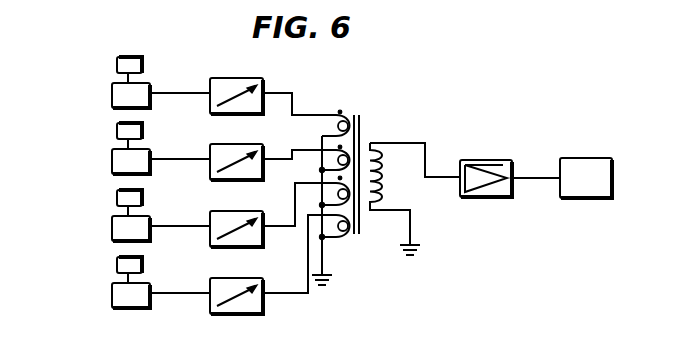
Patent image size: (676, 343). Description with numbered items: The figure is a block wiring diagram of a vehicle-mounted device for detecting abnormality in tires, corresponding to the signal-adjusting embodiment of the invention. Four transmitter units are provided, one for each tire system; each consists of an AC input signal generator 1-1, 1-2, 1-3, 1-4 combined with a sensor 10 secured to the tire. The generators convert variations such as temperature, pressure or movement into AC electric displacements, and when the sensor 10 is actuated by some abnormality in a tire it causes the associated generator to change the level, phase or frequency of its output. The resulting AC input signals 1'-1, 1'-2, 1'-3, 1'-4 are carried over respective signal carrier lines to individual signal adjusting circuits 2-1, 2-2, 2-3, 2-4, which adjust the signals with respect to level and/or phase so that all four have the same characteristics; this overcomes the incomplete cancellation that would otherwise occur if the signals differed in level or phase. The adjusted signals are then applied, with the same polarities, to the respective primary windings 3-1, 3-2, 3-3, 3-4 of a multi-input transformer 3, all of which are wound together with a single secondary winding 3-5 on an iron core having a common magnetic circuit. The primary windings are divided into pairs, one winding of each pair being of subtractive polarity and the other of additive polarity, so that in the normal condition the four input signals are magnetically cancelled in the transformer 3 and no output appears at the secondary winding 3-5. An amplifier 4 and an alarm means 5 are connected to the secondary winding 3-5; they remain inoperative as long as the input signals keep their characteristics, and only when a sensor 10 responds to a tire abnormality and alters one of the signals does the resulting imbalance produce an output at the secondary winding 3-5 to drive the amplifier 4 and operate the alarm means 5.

The AC input signal generator 1-1 is at (117, 64).
The AC input signal generator 1-2 is at (117, 130).
The AC input signal generator 1-3 is at (117, 197).
The AC input signal generator 1-4 is at (117, 264).
The sensor 10 is at (112, 97).
The AC input signal 1'-1 is at (180, 79).
The AC input signal 1'-2 is at (180, 145).
The AC input signal 1'-3 is at (180, 212).
The AC input signal 1'-4 is at (180, 279).
The signal adjusting circuit 2-1 is at (237, 78).
The signal adjusting circuit 2-2 is at (237, 144).
The signal adjusting circuit 2-3 is at (237, 211).
The signal adjusting circuit 2-4 is at (237, 278).
The multi-input transformer 3 is at (352, 110).
The primary winding 3-1 is at (337, 124).
The primary winding 3-2 is at (337, 158).
The primary winding 3-3 is at (337, 192).
The primary winding 3-4 is at (339, 231).
The secondary winding 3-5 is at (378, 185).
The amplifier 4 is at (483, 160).
The alarm means 5 is at (583, 158).